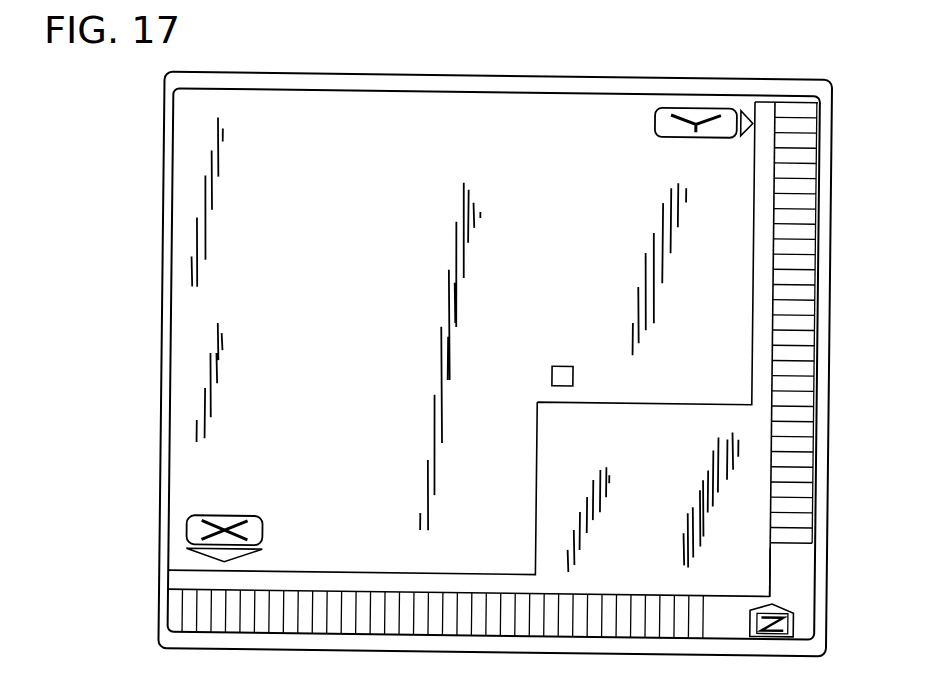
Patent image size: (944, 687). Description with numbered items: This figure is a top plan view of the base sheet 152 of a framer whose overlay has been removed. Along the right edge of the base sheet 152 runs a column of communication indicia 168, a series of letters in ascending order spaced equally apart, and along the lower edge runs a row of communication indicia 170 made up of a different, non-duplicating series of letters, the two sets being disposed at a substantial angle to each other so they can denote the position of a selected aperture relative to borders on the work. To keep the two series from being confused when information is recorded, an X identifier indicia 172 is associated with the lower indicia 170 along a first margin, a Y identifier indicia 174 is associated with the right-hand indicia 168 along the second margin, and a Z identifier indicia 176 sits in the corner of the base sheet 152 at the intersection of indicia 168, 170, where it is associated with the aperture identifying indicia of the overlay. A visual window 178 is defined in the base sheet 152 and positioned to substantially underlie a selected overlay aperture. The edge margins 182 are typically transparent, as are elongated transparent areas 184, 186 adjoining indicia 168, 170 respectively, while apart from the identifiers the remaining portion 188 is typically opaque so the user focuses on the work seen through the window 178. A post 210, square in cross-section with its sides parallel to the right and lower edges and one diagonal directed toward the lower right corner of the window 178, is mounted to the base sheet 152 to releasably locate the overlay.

The base sheet 152 is at (162, 190).
The communication indicia 168 is at (821, 299).
The communication indicia 170 is at (619, 590).
The X identifier indicia 172 is at (188, 529).
The Y identifier indicia 174 is at (722, 106).
The Z identifier indicia 176 is at (777, 601).
The visual window 178 is at (757, 542).
The edge margins 182 is at (823, 200).
The elongated transparent area 184 is at (764, 110).
The elongated transparent area 186 is at (193, 582).
The remaining portion 188 is at (180, 420).
The post 210 is at (568, 387).